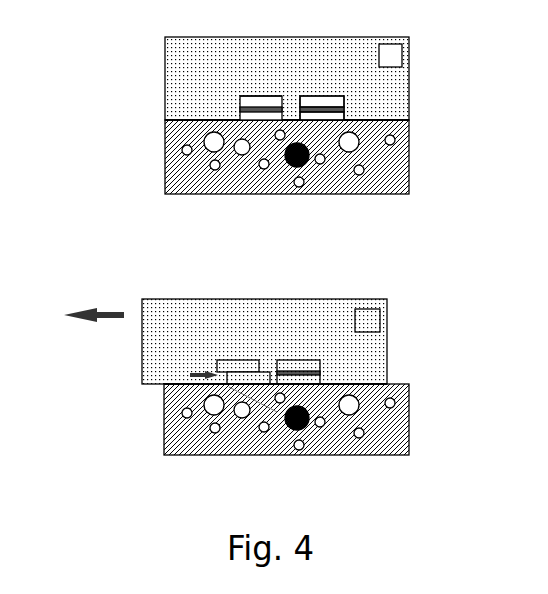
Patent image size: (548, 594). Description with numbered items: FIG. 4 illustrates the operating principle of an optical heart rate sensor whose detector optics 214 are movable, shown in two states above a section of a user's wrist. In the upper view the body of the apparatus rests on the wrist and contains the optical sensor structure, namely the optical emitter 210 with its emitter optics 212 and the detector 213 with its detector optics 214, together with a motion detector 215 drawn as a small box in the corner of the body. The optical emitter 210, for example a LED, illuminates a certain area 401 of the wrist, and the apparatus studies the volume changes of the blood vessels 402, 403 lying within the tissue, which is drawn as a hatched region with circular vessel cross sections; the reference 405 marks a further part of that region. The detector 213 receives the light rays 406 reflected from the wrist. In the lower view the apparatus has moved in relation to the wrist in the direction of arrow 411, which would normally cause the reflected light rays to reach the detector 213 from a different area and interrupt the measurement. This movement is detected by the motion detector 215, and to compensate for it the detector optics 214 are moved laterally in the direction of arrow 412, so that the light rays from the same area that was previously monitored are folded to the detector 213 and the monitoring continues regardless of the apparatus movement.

The optical emitter 210 is at (337, 98).
The emitter optics 212 is at (342, 112).
The detector 213 is at (238, 97).
The detector optics 214 is at (238, 110).
The motion detector 215 is at (397, 53).
The area 401 is at (288, 202).
The blood vessel 402 is at (285, 162).
The blood vessel 403 is at (359, 173).
The substrate surface 405 is at (317, 138).
The light rays 406 is at (273, 130).
The arrow 411 is at (77, 270).
The arrow 412 is at (166, 303).